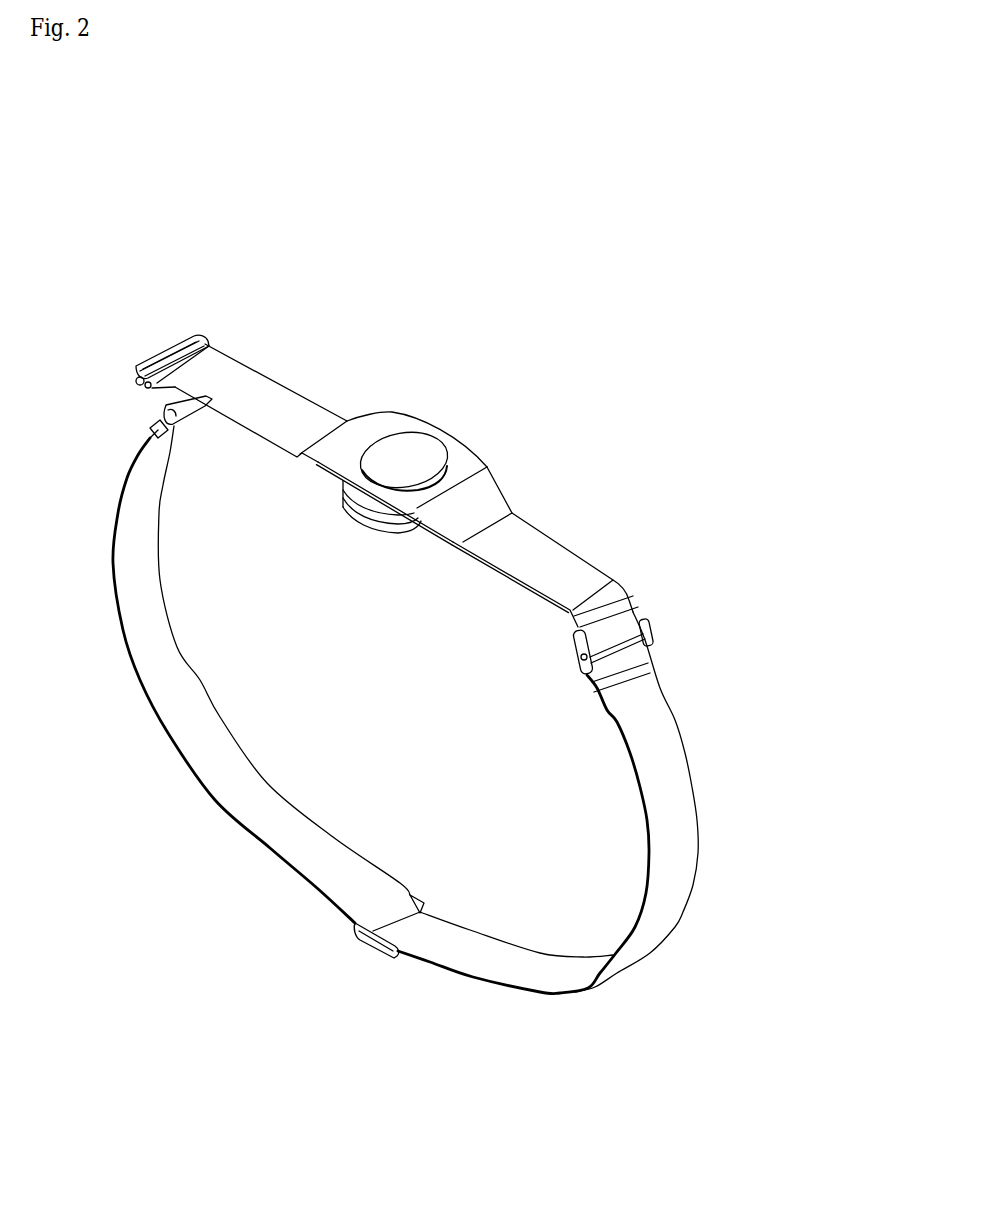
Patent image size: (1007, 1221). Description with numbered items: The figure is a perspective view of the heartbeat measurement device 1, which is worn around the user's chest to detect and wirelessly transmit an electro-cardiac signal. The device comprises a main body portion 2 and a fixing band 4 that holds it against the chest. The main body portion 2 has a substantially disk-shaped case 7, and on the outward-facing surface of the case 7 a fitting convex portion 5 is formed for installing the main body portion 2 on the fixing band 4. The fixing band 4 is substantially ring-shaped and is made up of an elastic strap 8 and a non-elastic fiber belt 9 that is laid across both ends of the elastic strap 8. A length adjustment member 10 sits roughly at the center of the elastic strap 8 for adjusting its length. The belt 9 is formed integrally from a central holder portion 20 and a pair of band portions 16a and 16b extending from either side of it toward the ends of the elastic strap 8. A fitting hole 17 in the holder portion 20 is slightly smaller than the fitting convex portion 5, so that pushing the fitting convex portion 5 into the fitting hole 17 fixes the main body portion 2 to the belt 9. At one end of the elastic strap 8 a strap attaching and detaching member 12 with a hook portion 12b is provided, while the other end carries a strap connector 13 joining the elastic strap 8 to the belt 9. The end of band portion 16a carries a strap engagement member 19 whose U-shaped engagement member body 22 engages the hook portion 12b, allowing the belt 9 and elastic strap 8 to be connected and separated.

The heartbeat measurement device 1 is at (419, 468).
The main body portion 2 is at (371, 531).
The fixing band 4 is at (411, 721).
The fitting convex portion 5 is at (427, 436).
The case 7 is at (400, 533).
The elastic strap 8 is at (214, 812).
The belt 9 is at (413, 466).
The length adjustment member 10 is at (378, 958).
The strap attaching and detaching member 12 is at (147, 440).
The hook portion 12b is at (188, 408).
The strap connector 13 is at (655, 622).
The band portion 16a is at (275, 397).
The band portion 16b is at (573, 567).
The fitting hole 17 is at (403, 443).
The strap engagement member 19 is at (155, 316).
The holder portion 20 is at (452, 435).
The engagement member body 22 is at (151, 352).